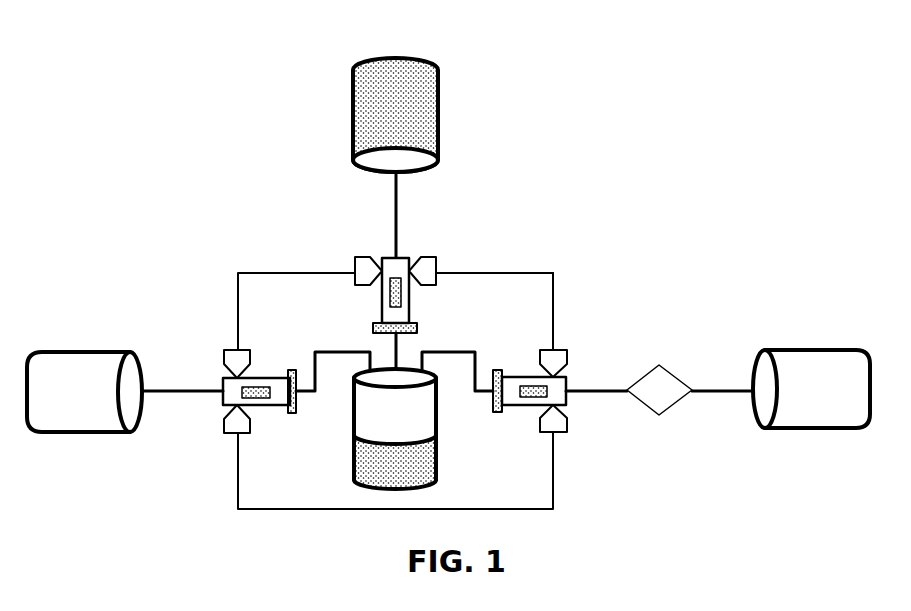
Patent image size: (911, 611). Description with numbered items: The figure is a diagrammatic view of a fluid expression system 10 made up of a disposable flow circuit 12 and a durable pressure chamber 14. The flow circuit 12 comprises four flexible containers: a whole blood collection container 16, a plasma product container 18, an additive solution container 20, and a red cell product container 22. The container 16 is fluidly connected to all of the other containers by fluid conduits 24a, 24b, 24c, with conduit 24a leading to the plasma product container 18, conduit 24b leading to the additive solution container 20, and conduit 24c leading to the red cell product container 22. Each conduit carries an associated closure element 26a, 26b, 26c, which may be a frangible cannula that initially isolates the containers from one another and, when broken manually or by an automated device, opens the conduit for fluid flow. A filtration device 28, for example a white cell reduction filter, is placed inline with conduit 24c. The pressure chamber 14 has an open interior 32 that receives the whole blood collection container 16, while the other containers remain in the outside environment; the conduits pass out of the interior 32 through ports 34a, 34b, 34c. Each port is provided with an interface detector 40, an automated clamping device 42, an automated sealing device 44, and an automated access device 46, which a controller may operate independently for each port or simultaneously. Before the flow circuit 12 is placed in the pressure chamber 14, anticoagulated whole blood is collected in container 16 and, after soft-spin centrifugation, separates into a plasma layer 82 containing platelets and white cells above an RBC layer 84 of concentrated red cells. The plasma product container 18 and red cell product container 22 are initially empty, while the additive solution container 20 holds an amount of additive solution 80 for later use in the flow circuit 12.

The fluid expression system 10 is at (634, 156).
The flow circuit 12 is at (344, 150).
The pressure chamber 14 is at (538, 262).
The whole blood collection container 16 is at (398, 429).
The plasma product container 18 is at (100, 352).
The additive solution container 20 is at (435, 88).
The red cell product container 22 is at (818, 350).
The fluid conduit 24a is at (185, 389).
The fluid conduit 24b is at (398, 210).
The fluid conduit 24c is at (716, 393).
The closure element 26a is at (262, 387).
The closure element 26b is at (401, 295).
The closure element 26c is at (525, 385).
The filtration device 28 is at (648, 370).
The open interior 32 is at (240, 500).
The port 34a is at (266, 415).
The port 34b is at (387, 339).
The port 34c is at (517, 417).
The interface detector 40 is at (430, 268).
The automated clamping device 42 is at (380, 325).
The automated sealing device 44 is at (388, 266).
The automated access device 46 is at (358, 265).
The additive solution 80 is at (424, 123).
The plasma layer 82 is at (424, 408).
The RBC layer 84 is at (365, 465).